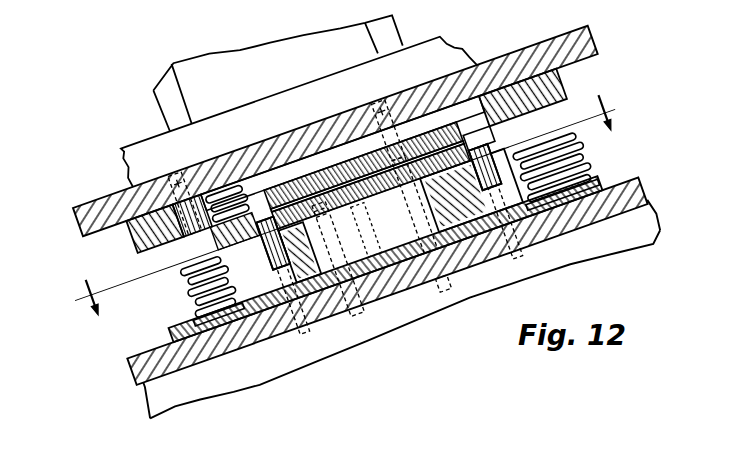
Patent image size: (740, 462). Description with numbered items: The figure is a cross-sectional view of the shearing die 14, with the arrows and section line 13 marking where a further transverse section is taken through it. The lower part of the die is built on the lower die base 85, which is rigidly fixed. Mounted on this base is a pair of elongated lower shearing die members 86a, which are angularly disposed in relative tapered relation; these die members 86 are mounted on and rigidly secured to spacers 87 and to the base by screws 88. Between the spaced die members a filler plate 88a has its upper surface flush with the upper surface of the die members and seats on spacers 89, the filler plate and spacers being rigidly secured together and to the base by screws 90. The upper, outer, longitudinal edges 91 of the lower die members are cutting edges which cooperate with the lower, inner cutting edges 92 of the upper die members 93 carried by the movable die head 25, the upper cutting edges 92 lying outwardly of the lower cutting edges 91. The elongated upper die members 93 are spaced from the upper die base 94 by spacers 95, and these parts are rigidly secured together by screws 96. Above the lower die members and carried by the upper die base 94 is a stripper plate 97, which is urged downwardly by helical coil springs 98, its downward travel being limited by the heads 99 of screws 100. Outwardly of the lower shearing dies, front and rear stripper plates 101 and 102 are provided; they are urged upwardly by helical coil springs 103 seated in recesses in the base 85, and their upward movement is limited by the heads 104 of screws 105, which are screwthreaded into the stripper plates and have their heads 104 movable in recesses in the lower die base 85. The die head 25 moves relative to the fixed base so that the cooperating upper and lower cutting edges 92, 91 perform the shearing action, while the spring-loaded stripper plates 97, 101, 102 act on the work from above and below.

The shearing die 14 is at (84, 93).
The movable die head 25 is at (157, 99).
The upper die base 94 is at (82, 217).
The screws 96 is at (150, 200).
The upper die members 93 is at (185, 257).
The spacers 95 is at (132, 240).
The stripper plate 97 is at (346, 165).
The lower shearing die members 86a is at (342, 179).
The screws 100 is at (262, 176).
The helical coil springs 98 is at (250, 175).
The screws 90 is at (334, 231).
The upper outer longitudinal cutting edges 91 is at (262, 222).
The lower inner cutting edges 92 is at (540, 120).
The screw heads 99 is at (185, 170).
The screws 88 is at (488, 258).
The filler plate 88a is at (352, 216).
The front stripper plate 101 is at (560, 146).
The rear stripper plate 102 is at (175, 280).
The lower die members 86 is at (185, 330).
The helical coil springs 103 is at (210, 305).
The screws 105 is at (167, 370).
The screw heads 104 is at (596, 214).
The lower die base 85 is at (378, 314).
The spacers 87 is at (466, 275).
The spacers 89 is at (388, 292).
The section line 13- 13 is at (341, 194).